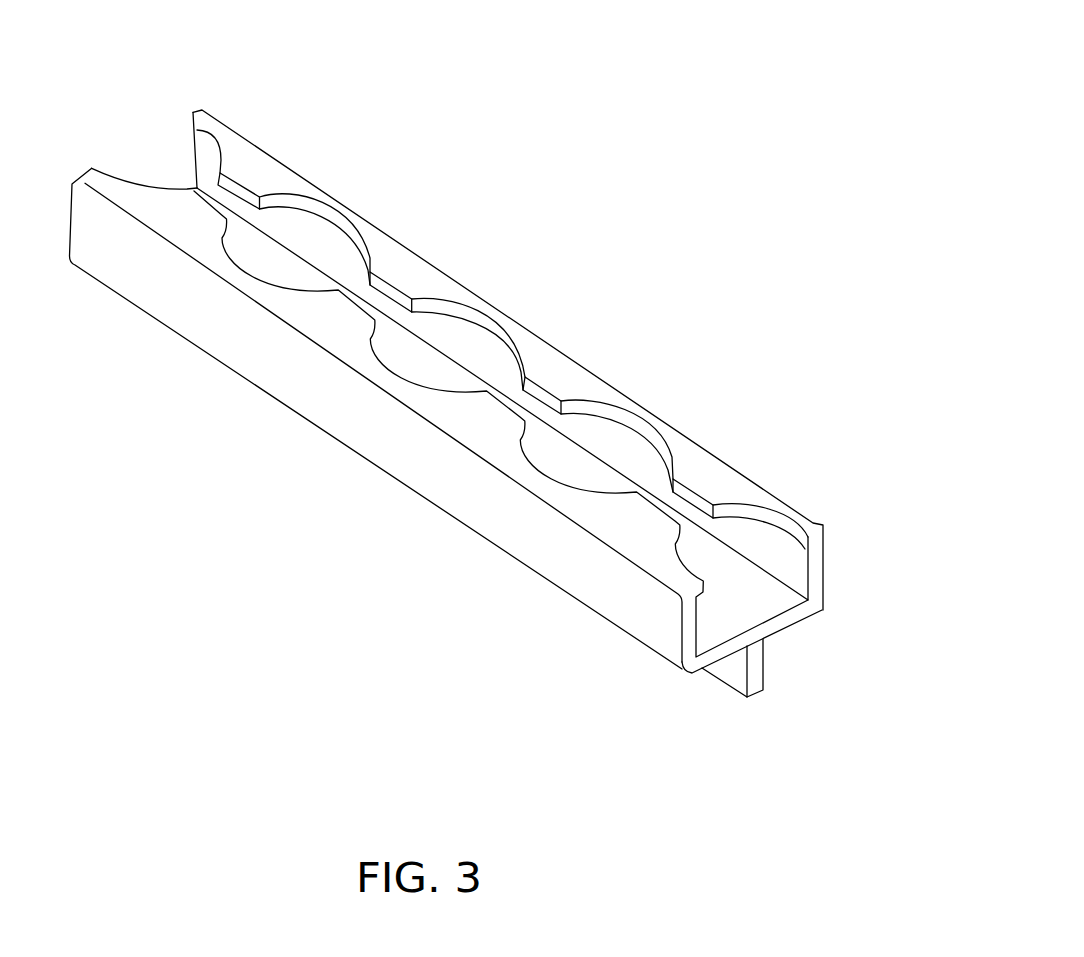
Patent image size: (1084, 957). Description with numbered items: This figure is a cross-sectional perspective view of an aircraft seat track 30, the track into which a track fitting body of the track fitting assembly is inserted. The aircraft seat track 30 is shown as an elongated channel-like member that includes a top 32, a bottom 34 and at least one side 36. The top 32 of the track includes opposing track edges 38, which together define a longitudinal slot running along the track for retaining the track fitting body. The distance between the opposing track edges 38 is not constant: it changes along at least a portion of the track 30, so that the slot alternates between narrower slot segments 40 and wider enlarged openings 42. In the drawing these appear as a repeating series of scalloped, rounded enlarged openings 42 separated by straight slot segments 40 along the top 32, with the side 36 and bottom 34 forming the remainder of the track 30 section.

The aircraft seat track 30 is at (606, 119).
The top 32 is at (172, 212).
The bottom 34 is at (698, 690).
The side 36 is at (385, 429).
The opposing track edges 38 is at (393, 372).
The slot segments 40 is at (250, 182).
The enlarged openings 42 is at (311, 242).